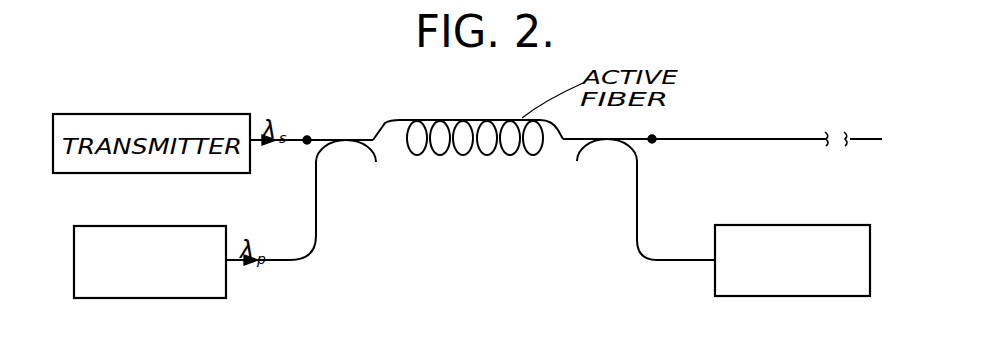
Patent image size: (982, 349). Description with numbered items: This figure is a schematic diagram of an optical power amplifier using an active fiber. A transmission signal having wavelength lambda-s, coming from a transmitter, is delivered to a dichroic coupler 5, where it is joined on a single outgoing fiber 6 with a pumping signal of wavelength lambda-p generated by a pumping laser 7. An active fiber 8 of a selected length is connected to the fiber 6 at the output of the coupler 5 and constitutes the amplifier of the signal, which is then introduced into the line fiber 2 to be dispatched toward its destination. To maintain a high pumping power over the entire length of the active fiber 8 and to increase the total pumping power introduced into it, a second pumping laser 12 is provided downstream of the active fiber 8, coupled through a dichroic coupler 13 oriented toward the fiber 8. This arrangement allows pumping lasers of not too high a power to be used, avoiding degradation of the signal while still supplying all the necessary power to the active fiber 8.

The line fiber 2 is at (749, 138).
The dichroic coupler 5 is at (343, 128).
The outgoing fiber 6 is at (375, 130).
The pumping laser 7 is at (93, 226).
The active fiber 8 is at (474, 162).
The second pumping laser 12 is at (750, 225).
The dichroic coupler 13 is at (603, 156).